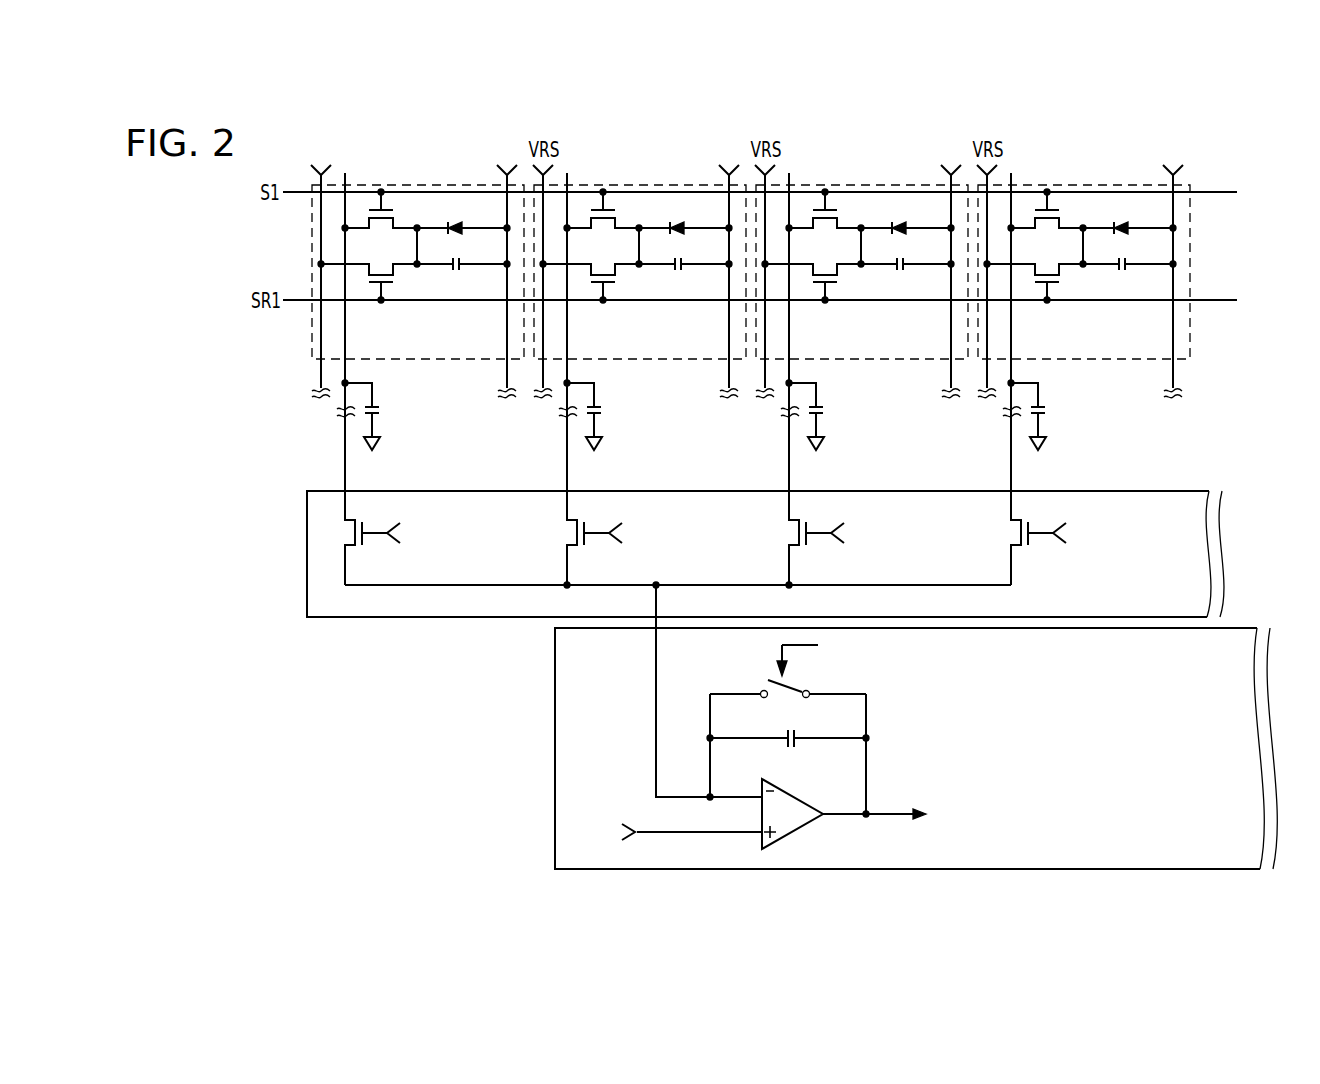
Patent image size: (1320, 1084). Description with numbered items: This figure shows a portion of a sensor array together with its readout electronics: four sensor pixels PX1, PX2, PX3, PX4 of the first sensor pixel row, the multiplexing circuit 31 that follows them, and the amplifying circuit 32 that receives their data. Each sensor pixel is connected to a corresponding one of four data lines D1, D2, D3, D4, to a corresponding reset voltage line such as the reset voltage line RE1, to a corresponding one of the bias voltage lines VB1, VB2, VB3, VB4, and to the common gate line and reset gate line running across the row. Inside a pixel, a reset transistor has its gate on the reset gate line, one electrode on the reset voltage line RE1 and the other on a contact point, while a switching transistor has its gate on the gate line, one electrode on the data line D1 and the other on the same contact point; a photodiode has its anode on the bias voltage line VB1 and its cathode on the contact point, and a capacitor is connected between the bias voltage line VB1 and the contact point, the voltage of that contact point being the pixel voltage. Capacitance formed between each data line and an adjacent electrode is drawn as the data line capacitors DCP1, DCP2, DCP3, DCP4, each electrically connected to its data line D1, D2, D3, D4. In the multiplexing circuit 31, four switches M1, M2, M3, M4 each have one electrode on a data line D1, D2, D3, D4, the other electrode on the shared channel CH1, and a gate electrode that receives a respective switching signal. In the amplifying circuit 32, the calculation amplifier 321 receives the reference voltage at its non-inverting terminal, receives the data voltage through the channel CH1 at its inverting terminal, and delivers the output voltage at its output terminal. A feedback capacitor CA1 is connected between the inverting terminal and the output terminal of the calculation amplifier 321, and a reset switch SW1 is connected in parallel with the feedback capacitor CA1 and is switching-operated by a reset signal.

The multiplexing circuit 31 is at (1118, 491).
The amplifying circuit 32 is at (555, 750).
The calculation amplifier 321 is at (793, 833).
The sensor pixel PX1 is at (390, 183).
The sensor pixel PX2 is at (640, 247).
The sensor pixel PX3 is at (862, 247).
The sensor pixel PX4 is at (1084, 247).
The data line D1 is at (346, 341).
The data line D2 is at (587, 379).
The data line D3 is at (809, 379).
The data line D4 is at (1031, 379).
The bias voltage line VB1 is at (507, 341).
The bias voltage line VB2 is at (706, 267).
The bias voltage line VB3 is at (928, 267).
The bias voltage line VB4 is at (1150, 267).
The reset voltage line RE1 is at (321, 341).
The data line capacitor DCP1 is at (386, 416).
The data line capacitor DCP2 is at (608, 416).
The data line capacitor DCP3 is at (830, 416).
The data line capacitor DCP4 is at (1052, 416).
The switch M1 is at (395, 547).
The switch M2 is at (617, 547).
The switch M3 is at (839, 547).
The switch M4 is at (1061, 547).
The channel CH1 is at (656, 660).
The reset switch SW1 is at (788, 680).
The feedback capacitor CA1 is at (788, 749).